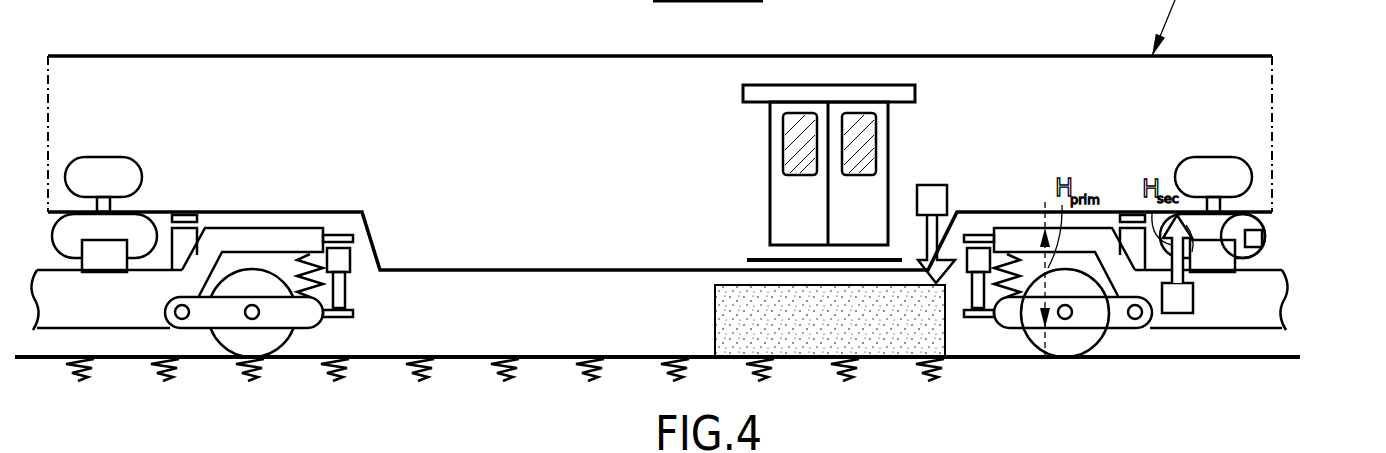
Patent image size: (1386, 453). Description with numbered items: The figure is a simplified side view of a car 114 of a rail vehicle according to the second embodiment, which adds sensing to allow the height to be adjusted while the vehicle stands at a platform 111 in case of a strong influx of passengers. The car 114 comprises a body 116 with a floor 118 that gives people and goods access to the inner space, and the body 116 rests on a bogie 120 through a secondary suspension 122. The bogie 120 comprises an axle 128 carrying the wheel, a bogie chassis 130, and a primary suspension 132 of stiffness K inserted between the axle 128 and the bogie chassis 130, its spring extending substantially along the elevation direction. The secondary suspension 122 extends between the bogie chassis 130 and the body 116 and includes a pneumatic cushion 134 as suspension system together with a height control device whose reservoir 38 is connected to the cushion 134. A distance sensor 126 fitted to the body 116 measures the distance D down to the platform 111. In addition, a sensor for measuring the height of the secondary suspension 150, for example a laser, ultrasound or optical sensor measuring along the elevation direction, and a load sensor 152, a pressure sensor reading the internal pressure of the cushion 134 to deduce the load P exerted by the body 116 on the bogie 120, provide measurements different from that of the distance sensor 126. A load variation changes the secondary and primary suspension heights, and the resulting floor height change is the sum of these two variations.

The reservoir 38 is at (1203, 175).
The platform 111 is at (810, 287).
The car 114 is at (1252, 43).
The body 116 is at (1272, 118).
The floor 118 is at (757, 260).
The bogie 120 is at (1250, 343).
The secondary suspension 122 is at (1284, 216).
The distance sensor 126 is at (935, 195).
The axle 128 is at (1067, 314).
The bogie chassis 130 is at (1225, 305).
The primary suspension 132 is at (1004, 303).
The pneumatic cushion 134 is at (1262, 248).
The sensor for measuring the height of the secondary suspension 150 is at (1175, 313).
The load sensor 152 is at (1264, 238).